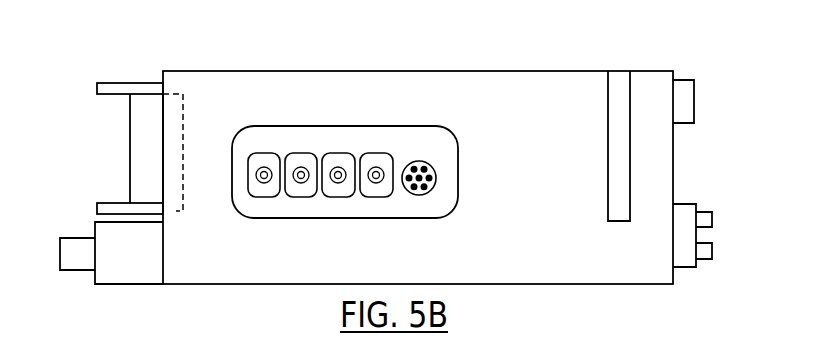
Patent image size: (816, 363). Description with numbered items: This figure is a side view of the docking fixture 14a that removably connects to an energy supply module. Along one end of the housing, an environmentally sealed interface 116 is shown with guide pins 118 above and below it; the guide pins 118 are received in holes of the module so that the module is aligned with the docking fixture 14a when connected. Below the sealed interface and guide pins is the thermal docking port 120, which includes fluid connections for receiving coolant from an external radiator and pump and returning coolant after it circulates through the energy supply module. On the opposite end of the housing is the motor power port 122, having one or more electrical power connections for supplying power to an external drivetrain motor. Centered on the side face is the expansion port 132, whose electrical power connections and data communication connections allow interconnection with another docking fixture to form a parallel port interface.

The docking fixture 14a is at (549, 53).
The environmentally sealed interface 116 is at (130, 108).
The guide pins 118 is at (122, 85).
The thermal docking port 120 is at (70, 277).
The motor power port 122 is at (682, 273).
The expansion port 132 is at (306, 218).